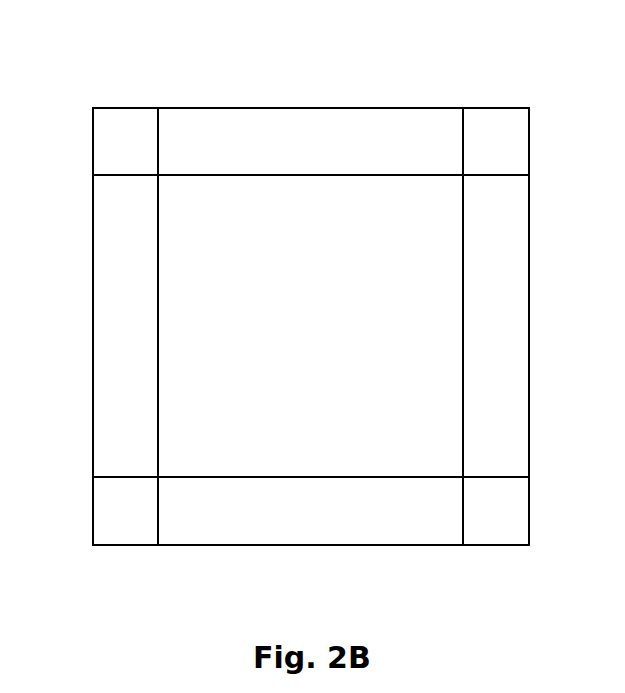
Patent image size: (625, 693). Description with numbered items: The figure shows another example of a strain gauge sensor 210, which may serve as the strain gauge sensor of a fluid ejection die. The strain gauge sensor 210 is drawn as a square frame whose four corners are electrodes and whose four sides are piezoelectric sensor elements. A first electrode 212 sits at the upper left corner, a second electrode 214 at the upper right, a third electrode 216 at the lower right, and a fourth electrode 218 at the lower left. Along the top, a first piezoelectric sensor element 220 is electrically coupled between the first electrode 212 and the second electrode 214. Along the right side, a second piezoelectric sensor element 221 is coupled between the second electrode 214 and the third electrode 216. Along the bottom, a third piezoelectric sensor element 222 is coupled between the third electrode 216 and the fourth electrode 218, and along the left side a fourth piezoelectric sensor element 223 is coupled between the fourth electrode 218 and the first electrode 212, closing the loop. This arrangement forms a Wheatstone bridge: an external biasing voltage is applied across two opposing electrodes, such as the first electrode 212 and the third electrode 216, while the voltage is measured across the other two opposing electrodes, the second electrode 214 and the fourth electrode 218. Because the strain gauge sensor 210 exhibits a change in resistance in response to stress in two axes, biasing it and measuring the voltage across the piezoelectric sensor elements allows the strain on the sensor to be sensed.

The strain gauge sensor 210 is at (308, 288).
The first electrode 212 is at (122, 118).
The second electrode 214 is at (492, 118).
The third electrode 216 is at (510, 525).
The fourth electrode 218 is at (108, 525).
The first piezoelectric sensor element 220 is at (290, 113).
The second piezoelectric sensor element 221 is at (510, 335).
The third piezoelectric sensor element 222 is at (282, 488).
The fourth piezoelectric sensor element 223 is at (110, 337).